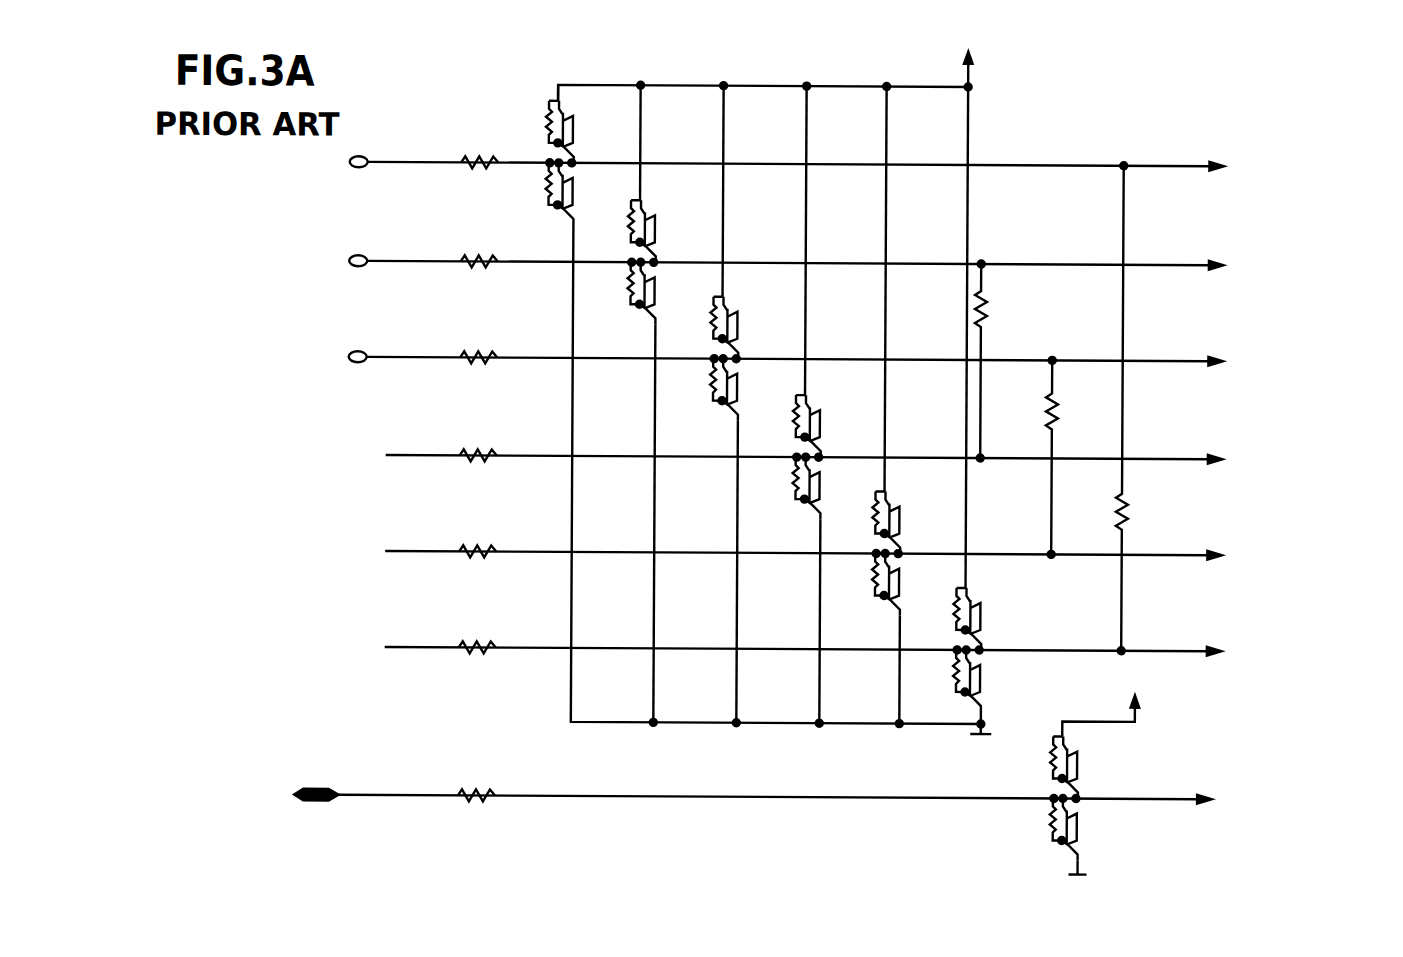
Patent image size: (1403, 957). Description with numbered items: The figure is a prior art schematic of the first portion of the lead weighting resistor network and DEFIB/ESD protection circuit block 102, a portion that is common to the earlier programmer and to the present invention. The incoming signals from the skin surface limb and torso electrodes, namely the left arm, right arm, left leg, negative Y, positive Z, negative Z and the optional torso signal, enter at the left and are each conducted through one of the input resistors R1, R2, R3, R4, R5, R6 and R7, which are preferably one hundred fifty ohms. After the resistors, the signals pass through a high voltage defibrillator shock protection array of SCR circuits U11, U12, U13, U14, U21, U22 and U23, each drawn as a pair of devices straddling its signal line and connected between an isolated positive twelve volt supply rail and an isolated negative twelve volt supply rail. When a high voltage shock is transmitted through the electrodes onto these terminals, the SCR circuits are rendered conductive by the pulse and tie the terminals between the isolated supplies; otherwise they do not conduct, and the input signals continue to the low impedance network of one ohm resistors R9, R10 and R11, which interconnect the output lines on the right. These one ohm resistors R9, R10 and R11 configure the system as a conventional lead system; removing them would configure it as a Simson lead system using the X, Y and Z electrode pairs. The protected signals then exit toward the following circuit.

The lead weighting resistor network and DEFIB/ESD protection circuit block 102 is at (428, 729).
The input resistor R1 is at (478, 149).
The input resistor R2 is at (481, 247).
The input resistor R3 is at (478, 343).
The input resistor R4 is at (478, 440).
The input resistor R5 is at (477, 537).
The input resistor R6 is at (477, 633).
The input resistor R7 is at (478, 779).
The one ohm resistor R9 is at (1002, 361).
The one ohm resistor R10 is at (1085, 457).
The one ohm resistor R11 is at (1152, 408).
The SCR circuit U11 is at (539, 155).
The SCR circuit U12 is at (619, 403).
The SCR circuit U13 is at (702, 403).
The SCR circuit U14 is at (784, 404).
The SCR circuit U21 is at (865, 404).
The SCR circuit U22 is at (946, 405).
The SCR circuit U23 is at (1095, 782).